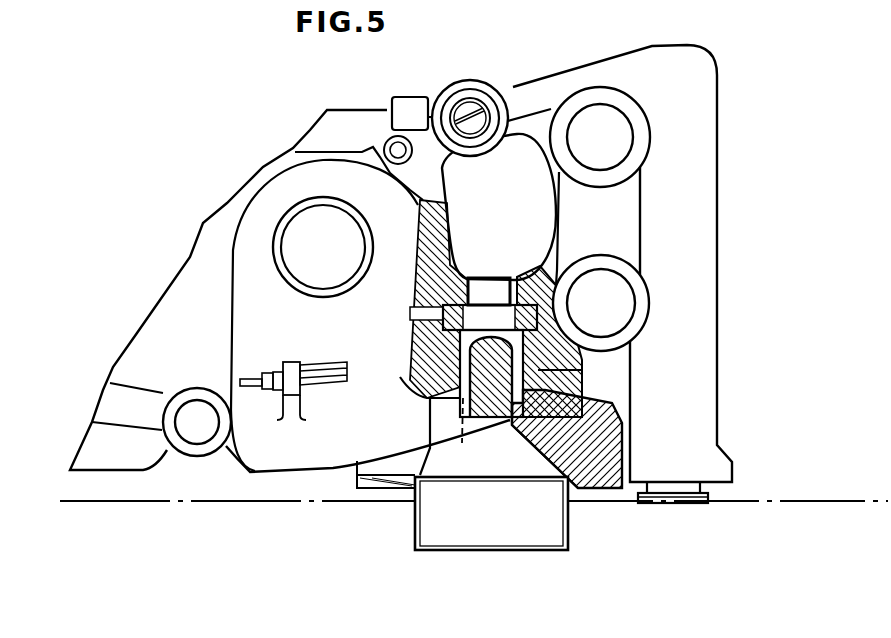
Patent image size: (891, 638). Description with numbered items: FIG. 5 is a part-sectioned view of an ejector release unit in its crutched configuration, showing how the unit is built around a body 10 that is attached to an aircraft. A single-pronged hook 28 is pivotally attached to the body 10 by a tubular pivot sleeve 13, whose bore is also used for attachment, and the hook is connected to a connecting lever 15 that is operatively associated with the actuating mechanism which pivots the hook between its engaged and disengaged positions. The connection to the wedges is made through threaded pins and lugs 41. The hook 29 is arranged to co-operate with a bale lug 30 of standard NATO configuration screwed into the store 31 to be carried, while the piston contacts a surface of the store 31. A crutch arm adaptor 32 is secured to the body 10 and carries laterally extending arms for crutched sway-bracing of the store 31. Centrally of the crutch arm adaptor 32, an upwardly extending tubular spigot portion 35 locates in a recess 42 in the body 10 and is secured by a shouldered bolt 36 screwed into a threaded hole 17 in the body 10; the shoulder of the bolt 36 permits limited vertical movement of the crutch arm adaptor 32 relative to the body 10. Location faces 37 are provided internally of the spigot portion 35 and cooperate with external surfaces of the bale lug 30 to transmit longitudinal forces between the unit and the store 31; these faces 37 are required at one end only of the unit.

The body 10 is at (540, 90).
The pivot sleeve 13 is at (322, 207).
The connecting lever 15 is at (147, 418).
The threaded hole 17 is at (563, 293).
The single-pronged hook 28 is at (685, 488).
The hook 29 is at (340, 467).
The bale lug 30 is at (462, 525).
The store 31 is at (835, 500).
The crutch arm adaptor 32 is at (595, 455).
The tubular spigot portion 35 is at (548, 375).
The shouldered bolt 36 is at (488, 317).
The location faces 37 is at (508, 393).
The lugs 41 is at (302, 402).
The recess 42 is at (563, 332).